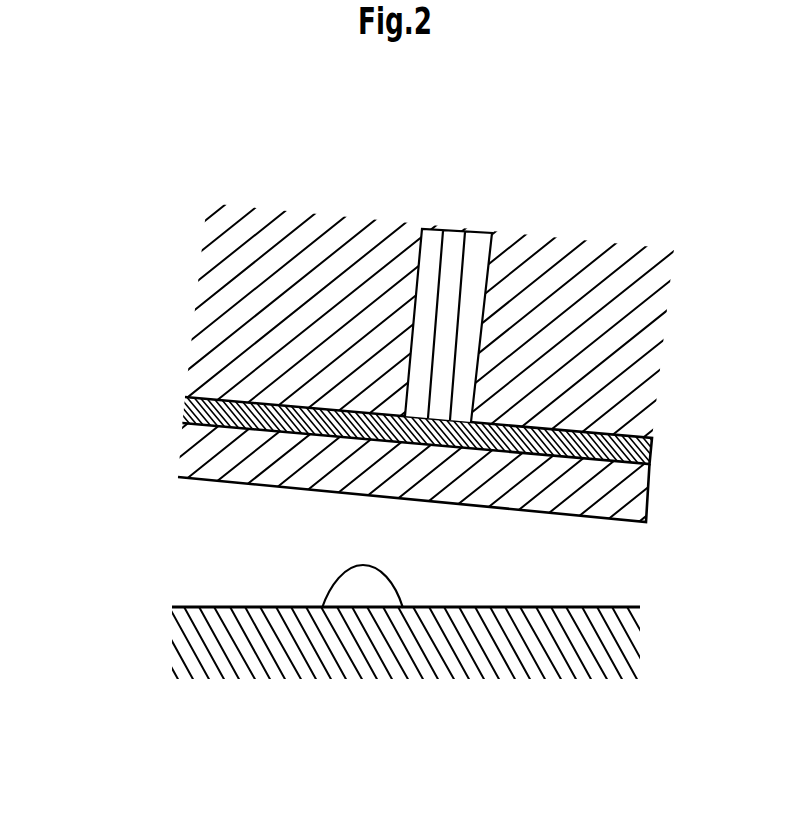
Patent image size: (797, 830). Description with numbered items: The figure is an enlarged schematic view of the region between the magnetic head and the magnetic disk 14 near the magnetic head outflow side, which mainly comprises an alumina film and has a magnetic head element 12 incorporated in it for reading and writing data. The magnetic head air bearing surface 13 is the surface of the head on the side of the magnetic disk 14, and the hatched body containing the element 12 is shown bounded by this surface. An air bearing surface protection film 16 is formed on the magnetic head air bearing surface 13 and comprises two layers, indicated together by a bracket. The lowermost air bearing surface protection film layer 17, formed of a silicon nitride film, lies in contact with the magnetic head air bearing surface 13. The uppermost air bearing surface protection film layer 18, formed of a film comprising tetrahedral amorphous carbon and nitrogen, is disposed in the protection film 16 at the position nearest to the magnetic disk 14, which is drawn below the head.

The magnetic head element 12 is at (418, 211).
The magnetic head air bearing surface 13 is at (598, 366).
The magnetic disk 14 is at (403, 608).
The air bearing surface protection film 16 is at (401, 456).
The lowermost air bearing surface protection film layer 17 is at (650, 448).
The uppermost air bearing surface protection film layer 18 is at (635, 492).